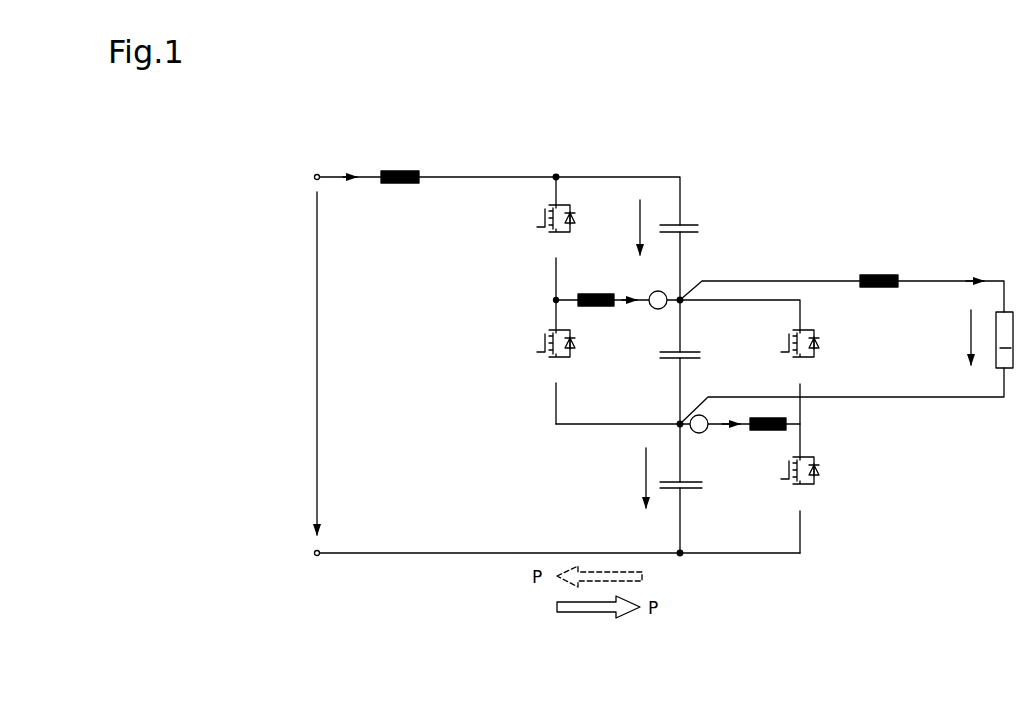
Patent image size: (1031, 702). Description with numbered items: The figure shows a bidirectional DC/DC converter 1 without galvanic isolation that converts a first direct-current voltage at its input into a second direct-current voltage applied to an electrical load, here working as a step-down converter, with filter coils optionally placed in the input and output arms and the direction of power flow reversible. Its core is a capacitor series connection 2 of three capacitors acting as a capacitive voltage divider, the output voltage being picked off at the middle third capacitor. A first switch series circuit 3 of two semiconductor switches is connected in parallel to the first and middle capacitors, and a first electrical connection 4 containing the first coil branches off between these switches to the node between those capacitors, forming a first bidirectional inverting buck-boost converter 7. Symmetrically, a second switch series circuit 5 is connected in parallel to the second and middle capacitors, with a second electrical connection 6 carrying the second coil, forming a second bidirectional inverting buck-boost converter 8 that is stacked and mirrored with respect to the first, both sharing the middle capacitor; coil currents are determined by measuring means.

The DC/DC converter 1 is at (680, 135).
The capacitor series connection 2 is at (699, 265).
The first switch series circuit 3 is at (513, 332).
The first electrical connection 4 is at (553, 297).
The second switch series circuit 5 is at (820, 463).
The second electrical connection 6 is at (796, 427).
The first bidirectional inverting buck-boost converter 7 is at (556, 440).
The second bidirectional inverting buck-boost converter 8 is at (802, 567).